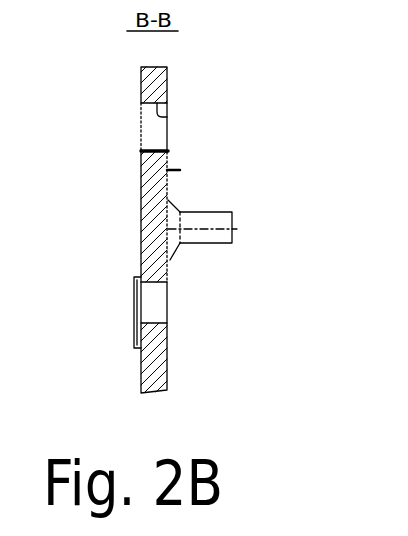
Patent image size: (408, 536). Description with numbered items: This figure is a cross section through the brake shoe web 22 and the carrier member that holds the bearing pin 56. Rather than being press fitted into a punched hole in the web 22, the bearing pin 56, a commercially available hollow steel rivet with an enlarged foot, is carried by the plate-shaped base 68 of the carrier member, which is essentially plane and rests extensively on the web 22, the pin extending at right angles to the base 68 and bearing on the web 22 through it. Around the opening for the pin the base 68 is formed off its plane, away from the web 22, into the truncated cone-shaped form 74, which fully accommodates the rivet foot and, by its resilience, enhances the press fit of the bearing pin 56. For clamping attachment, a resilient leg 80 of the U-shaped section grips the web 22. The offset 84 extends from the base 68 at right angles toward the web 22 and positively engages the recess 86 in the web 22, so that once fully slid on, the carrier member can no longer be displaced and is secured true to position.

The web 22 is at (153, 231).
The bearing pin 56 is at (217, 237).
The plate-shaped base 68 is at (168, 188).
The truncated cone-shaped form 74 is at (168, 242).
The leg 80 is at (137, 343).
The offset 84 is at (165, 148).
The recess 86 is at (160, 104).